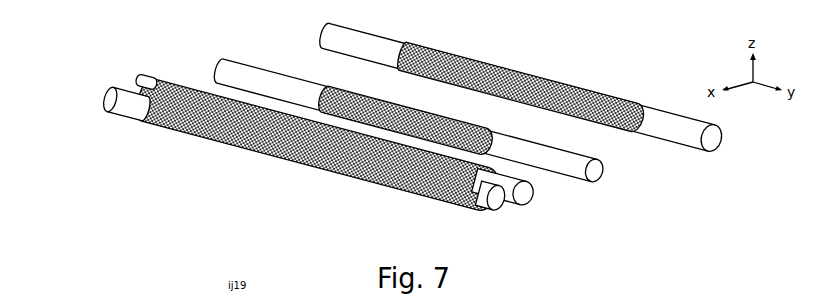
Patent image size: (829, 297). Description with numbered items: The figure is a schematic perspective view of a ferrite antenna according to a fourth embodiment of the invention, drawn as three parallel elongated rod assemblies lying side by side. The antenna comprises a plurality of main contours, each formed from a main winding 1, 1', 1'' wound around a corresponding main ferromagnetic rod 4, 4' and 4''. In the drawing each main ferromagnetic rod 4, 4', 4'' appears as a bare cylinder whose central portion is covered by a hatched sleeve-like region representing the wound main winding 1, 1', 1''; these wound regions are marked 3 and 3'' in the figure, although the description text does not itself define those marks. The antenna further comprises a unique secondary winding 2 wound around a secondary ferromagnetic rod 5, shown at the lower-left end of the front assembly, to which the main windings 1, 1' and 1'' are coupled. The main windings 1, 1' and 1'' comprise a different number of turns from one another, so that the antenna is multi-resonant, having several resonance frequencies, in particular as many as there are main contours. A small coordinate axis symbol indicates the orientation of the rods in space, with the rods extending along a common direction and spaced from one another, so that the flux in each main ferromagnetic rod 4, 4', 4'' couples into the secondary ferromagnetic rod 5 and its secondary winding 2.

The main winding 1 is at (522, 190).
The main winding 1' is at (538, 154).
The main winding 1'' is at (671, 137).
The secondary winding 2 is at (446, 203).
The sleeve 3 is at (323, 127).
The sleeve 3'' is at (520, 78).
The main ferromagnetic rod 4 is at (130, 60).
The main ferromagnetic rod 4' is at (259, 65).
The main ferromagnetic rod 4'' is at (343, 35).
The secondary ferromagnetic rod 5 is at (107, 98).